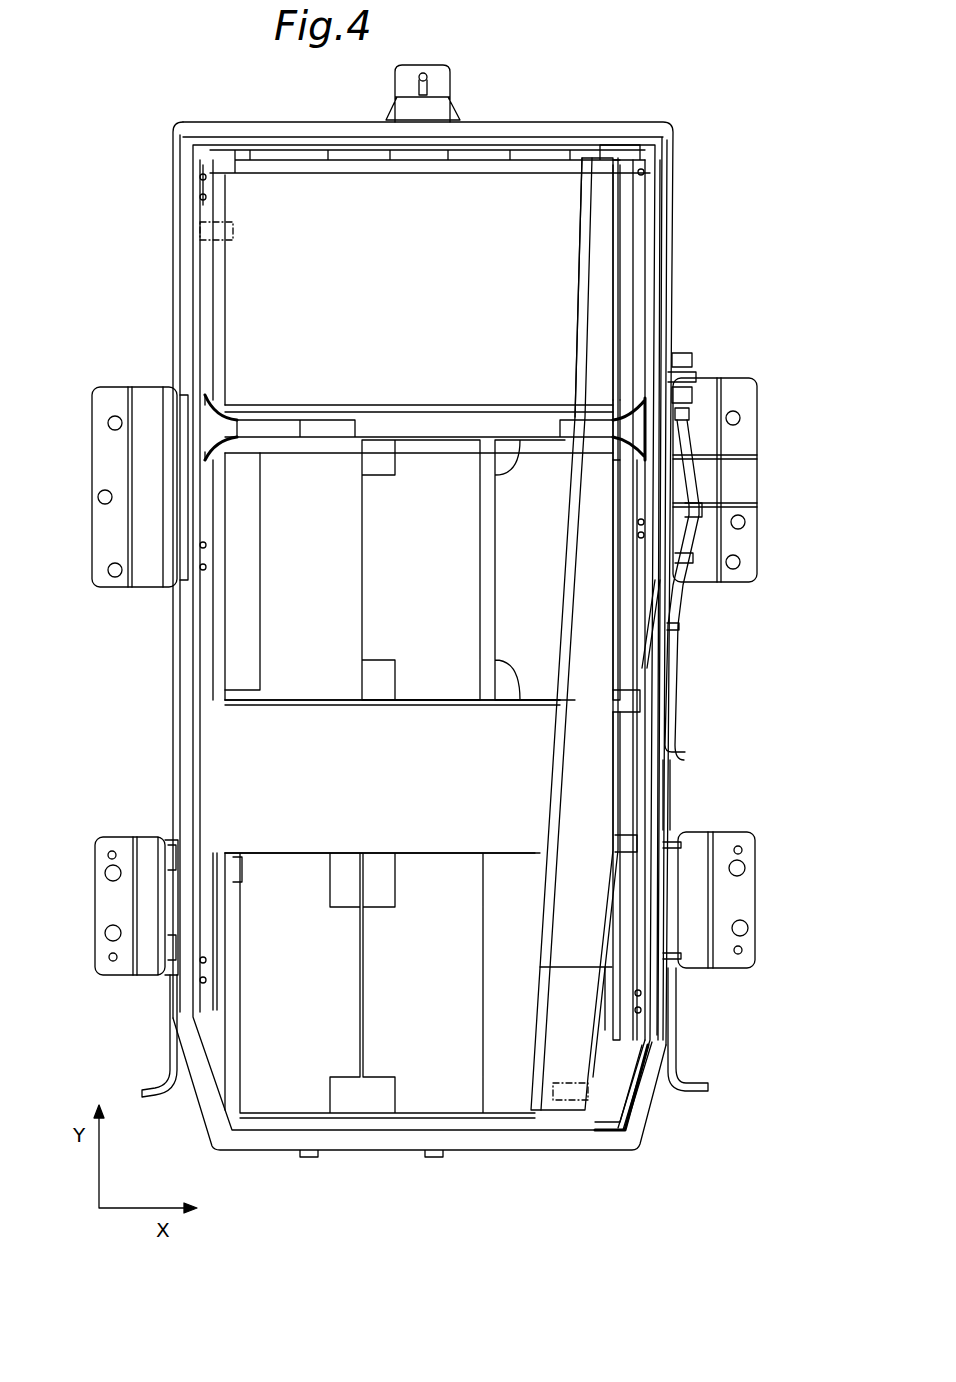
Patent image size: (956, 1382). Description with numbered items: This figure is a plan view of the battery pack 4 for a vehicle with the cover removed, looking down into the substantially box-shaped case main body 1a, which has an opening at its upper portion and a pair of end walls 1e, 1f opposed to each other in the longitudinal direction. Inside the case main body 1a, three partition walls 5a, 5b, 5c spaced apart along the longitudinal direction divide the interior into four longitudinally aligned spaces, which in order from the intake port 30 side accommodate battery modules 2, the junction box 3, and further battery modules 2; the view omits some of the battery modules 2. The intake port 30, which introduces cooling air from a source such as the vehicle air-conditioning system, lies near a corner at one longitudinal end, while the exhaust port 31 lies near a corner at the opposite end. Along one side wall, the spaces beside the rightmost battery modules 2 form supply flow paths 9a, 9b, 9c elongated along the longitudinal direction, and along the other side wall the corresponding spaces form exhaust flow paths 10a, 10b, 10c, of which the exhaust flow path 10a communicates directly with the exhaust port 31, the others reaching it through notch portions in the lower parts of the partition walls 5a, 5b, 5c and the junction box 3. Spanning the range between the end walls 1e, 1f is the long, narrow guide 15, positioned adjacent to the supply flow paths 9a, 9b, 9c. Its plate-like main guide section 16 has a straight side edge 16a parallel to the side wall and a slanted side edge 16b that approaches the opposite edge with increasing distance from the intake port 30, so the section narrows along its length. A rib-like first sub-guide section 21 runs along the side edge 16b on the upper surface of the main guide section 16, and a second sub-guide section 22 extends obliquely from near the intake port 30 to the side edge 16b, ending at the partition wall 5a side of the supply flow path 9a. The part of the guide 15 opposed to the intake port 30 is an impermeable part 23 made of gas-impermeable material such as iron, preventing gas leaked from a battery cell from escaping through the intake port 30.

The battery pack 4 is at (744, 122).
The case main body 1a is at (176, 240).
The end wall 1e is at (548, 132).
The end wall 1f is at (585, 1120).
The battery module 2 is at (500, 530).
The junction box 3 is at (207, 752).
The partition wall 5a is at (640, 838).
The partition wall 5b is at (640, 702).
The partition wall 5c is at (645, 400).
The supply flow path 9a is at (643, 1063).
The supply flow path 9b is at (650, 604).
The supply flow path 9c is at (643, 233).
The exhaust flow path 10a is at (205, 986).
The exhaust flow path 10b is at (205, 560).
The exhaust flow path 10c is at (205, 344).
The guide 15 is at (578, 232).
The main guide section 16 is at (607, 193).
The side edge 16a is at (617, 277).
The side edge 16b is at (576, 270).
The first sub-guide section 21 is at (625, 320).
The second sub-guide section 22 is at (597, 1010).
The impermeable part 23 is at (628, 1100).
The intake port 30 is at (560, 1105).
The exhaust port 31 is at (205, 222).